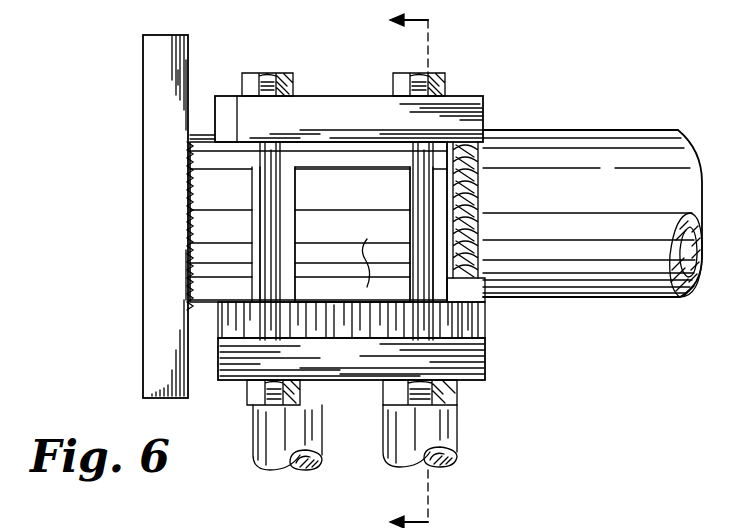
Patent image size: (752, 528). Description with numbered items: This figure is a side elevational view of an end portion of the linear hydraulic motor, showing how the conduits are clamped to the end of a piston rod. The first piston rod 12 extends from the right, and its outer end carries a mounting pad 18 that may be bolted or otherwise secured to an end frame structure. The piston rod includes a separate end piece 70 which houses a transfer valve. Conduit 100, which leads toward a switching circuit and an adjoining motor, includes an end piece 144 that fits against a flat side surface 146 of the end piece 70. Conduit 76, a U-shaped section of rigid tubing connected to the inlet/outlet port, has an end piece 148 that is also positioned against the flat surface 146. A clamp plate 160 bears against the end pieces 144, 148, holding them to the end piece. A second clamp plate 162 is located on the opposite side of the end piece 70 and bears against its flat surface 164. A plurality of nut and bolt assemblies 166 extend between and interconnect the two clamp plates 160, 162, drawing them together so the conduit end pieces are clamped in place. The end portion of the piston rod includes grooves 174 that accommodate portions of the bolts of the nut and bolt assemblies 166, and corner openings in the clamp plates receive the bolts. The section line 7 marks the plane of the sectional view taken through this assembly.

The first piston rod 12 is at (615, 286).
The mounting pad 18 is at (155, 283).
The end piece 70 is at (198, 195).
The conduit 76 is at (445, 433).
The conduit 100 is at (280, 458).
The end piece 144 is at (238, 330).
The flat side surface 146 is at (367, 287).
The end piece 148 is at (478, 322).
The clamp plate 160 is at (485, 362).
The second clamp plate 162 is at (483, 110).
The flat surface 164 is at (333, 140).
The nut and bolt assemblies 166 is at (270, 75).
The grooves 174 is at (408, 190).
The section line 7- 7 is at (396, 271).